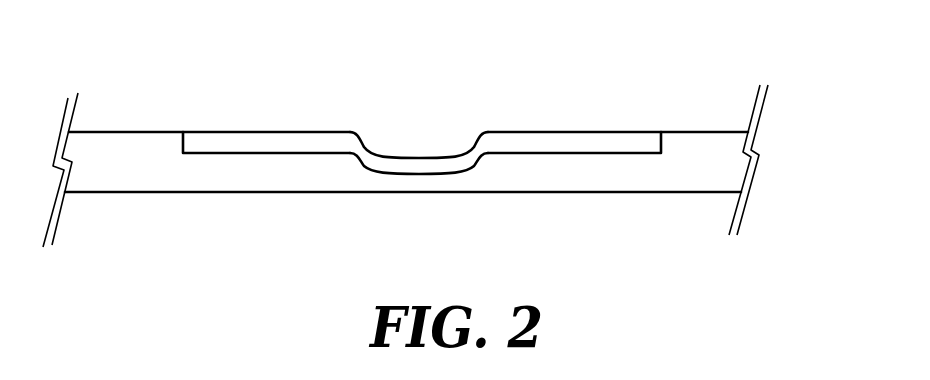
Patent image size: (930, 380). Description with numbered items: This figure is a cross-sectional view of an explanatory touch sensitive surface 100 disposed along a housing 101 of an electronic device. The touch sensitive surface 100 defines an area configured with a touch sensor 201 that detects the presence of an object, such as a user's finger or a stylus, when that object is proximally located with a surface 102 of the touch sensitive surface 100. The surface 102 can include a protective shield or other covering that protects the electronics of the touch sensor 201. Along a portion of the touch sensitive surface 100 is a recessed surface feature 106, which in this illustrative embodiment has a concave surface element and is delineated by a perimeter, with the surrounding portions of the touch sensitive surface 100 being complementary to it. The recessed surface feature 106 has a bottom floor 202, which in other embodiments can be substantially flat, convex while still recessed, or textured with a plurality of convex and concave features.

The touch sensitive surface 100 is at (527, 84).
The housing 101 is at (115, 147).
The surface 102 is at (280, 133).
The touch sensor 201 is at (577, 142).
The bottom floor 202 is at (420, 157).
The recessed surface feature 106 is at (403, 151).